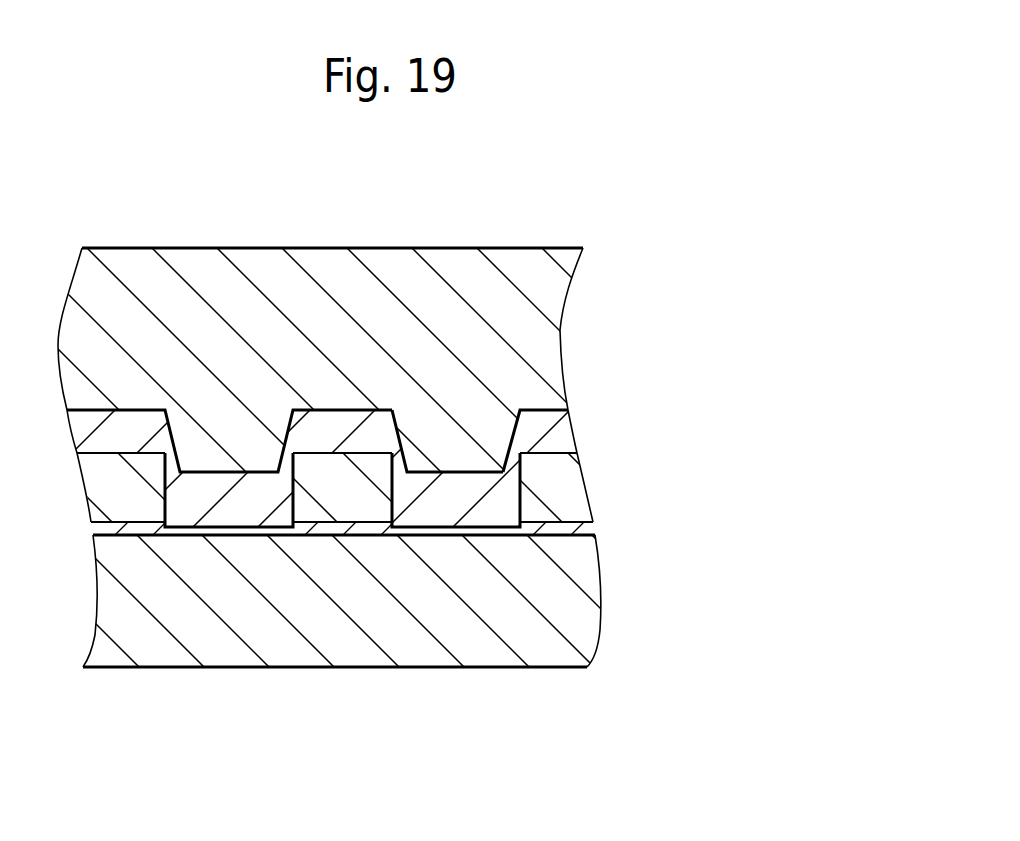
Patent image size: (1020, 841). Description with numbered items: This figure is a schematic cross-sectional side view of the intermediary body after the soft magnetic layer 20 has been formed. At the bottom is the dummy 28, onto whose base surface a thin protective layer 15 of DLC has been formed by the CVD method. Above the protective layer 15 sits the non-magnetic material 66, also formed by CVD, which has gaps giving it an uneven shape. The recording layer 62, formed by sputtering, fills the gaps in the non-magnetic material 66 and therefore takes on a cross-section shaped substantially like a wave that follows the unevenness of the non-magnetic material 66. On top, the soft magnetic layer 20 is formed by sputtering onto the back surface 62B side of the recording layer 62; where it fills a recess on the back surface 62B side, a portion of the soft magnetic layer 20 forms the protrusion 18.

The soft magnetic layer 20 is at (315, 248).
The recording layer 62 is at (578, 433).
The back surface 62B is at (548, 408).
The non-magnetic material 66 is at (577, 493).
The protective layer 15 is at (593, 535).
The dummy 28 is at (600, 590).
The protrusion 18 is at (445, 457).